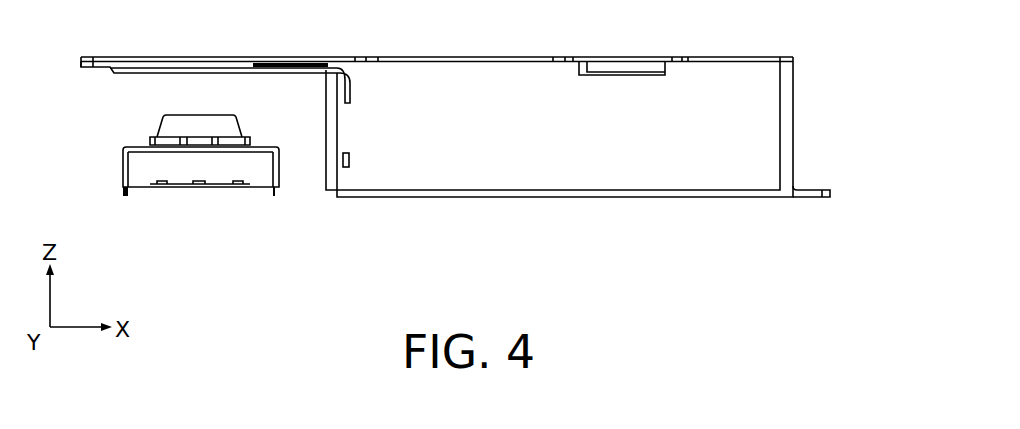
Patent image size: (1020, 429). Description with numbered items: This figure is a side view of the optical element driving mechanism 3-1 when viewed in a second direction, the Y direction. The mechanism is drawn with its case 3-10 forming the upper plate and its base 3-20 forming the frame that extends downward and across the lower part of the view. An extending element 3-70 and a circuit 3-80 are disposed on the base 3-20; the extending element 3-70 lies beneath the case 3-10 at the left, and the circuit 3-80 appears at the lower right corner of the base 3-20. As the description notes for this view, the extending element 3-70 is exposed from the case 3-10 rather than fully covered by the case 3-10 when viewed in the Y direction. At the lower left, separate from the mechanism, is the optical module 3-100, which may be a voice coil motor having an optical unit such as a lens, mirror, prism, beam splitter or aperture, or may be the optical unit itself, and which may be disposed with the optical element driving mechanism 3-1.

The optical element driving mechanism 3-1 is at (795, 52).
The case 3-10 is at (148, 57).
The extending element 3-70 is at (147, 75).
The base 3-20 is at (770, 121).
The circuit 3-80 is at (803, 190).
The optical module 3-100 is at (122, 158).